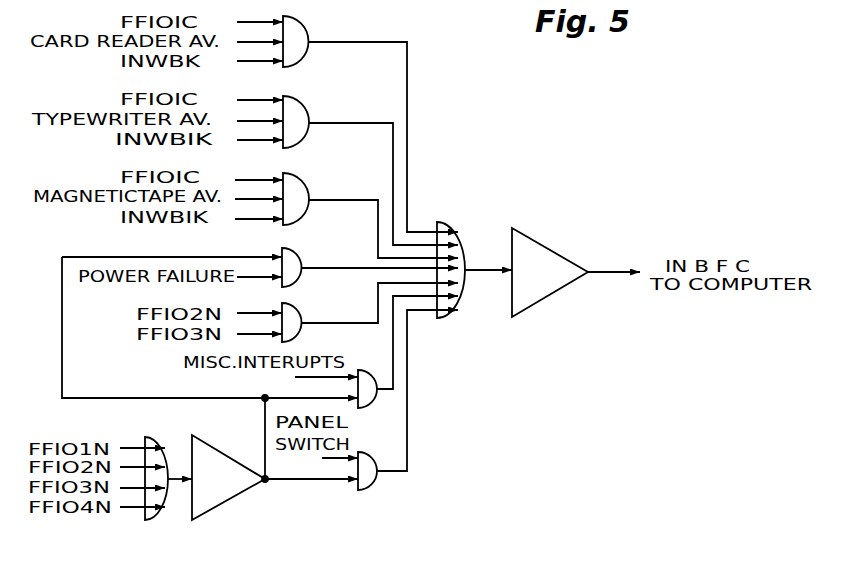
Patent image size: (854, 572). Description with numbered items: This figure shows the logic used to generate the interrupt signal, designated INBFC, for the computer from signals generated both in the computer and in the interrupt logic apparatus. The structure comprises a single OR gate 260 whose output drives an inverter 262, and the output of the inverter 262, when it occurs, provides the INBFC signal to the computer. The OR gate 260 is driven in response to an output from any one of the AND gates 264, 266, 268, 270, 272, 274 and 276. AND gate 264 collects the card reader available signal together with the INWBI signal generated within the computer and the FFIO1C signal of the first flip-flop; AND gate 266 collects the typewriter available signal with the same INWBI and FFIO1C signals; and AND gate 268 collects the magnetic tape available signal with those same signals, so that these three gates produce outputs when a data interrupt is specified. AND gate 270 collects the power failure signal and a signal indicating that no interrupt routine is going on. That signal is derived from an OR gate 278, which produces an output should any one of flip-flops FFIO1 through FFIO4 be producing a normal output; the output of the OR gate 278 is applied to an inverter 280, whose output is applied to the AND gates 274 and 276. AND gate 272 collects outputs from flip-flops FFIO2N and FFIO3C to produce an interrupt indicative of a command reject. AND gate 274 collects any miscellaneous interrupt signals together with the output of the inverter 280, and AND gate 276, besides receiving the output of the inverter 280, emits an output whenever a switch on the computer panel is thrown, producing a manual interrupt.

The OR gate 260 is at (448, 228).
The inverter 262 is at (545, 247).
The AND gate 264 is at (298, 28).
The AND gate 266 is at (300, 108).
The AND gate 268 is at (299, 183).
The AND gate 270 is at (296, 260).
The AND gate 272 is at (297, 315).
The AND gate 274 is at (367, 370).
The AND gate 276 is at (366, 452).
The OR gate 278 is at (153, 437).
The inverter 280 is at (222, 443).